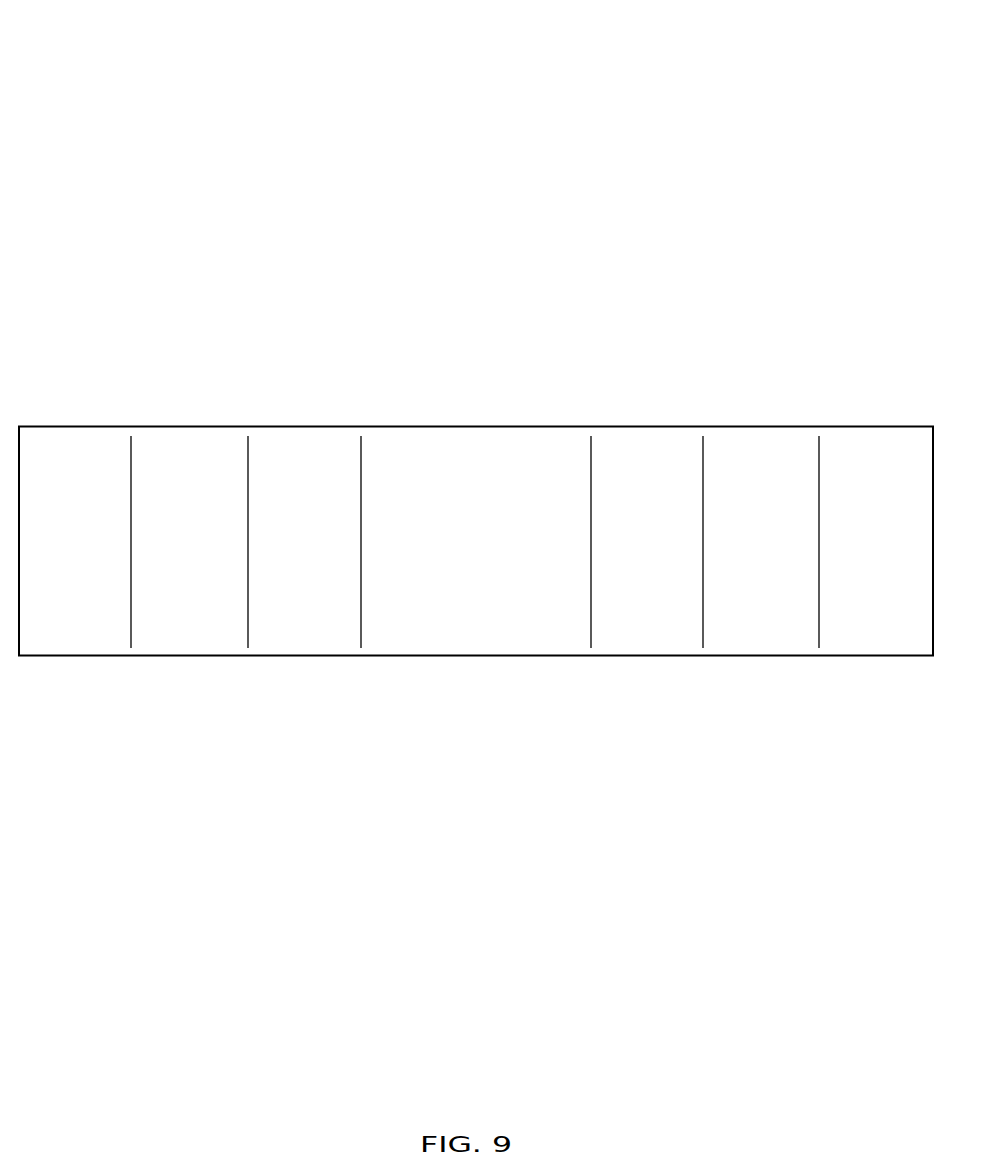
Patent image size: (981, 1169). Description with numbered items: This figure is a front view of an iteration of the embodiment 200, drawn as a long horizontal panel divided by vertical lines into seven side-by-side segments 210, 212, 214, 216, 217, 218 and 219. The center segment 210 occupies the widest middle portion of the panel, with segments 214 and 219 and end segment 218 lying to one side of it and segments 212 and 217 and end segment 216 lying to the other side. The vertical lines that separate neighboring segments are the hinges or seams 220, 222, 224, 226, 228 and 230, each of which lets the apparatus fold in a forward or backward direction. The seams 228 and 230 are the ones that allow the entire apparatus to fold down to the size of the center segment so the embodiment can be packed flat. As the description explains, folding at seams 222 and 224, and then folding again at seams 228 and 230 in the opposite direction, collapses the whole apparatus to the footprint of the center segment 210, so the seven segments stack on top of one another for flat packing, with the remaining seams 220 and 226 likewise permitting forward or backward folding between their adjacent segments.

The embodiment 200 is at (122, 47).
The segment 210 is at (507, 629).
The segment 212 is at (654, 629).
The segment 214 is at (307, 629).
The segment 216 is at (857, 629).
The segment 217 is at (782, 629).
The segment 218 is at (105, 629).
The segment 219 is at (199, 629).
The hinge or seam 220 is at (264, 453).
The hinge or seam 222 is at (377, 453).
The hinge or seam 224 is at (607, 453).
The hinge or seam 226 is at (719, 453).
The seam 228 is at (147, 453).
The seam 230 is at (835, 453).